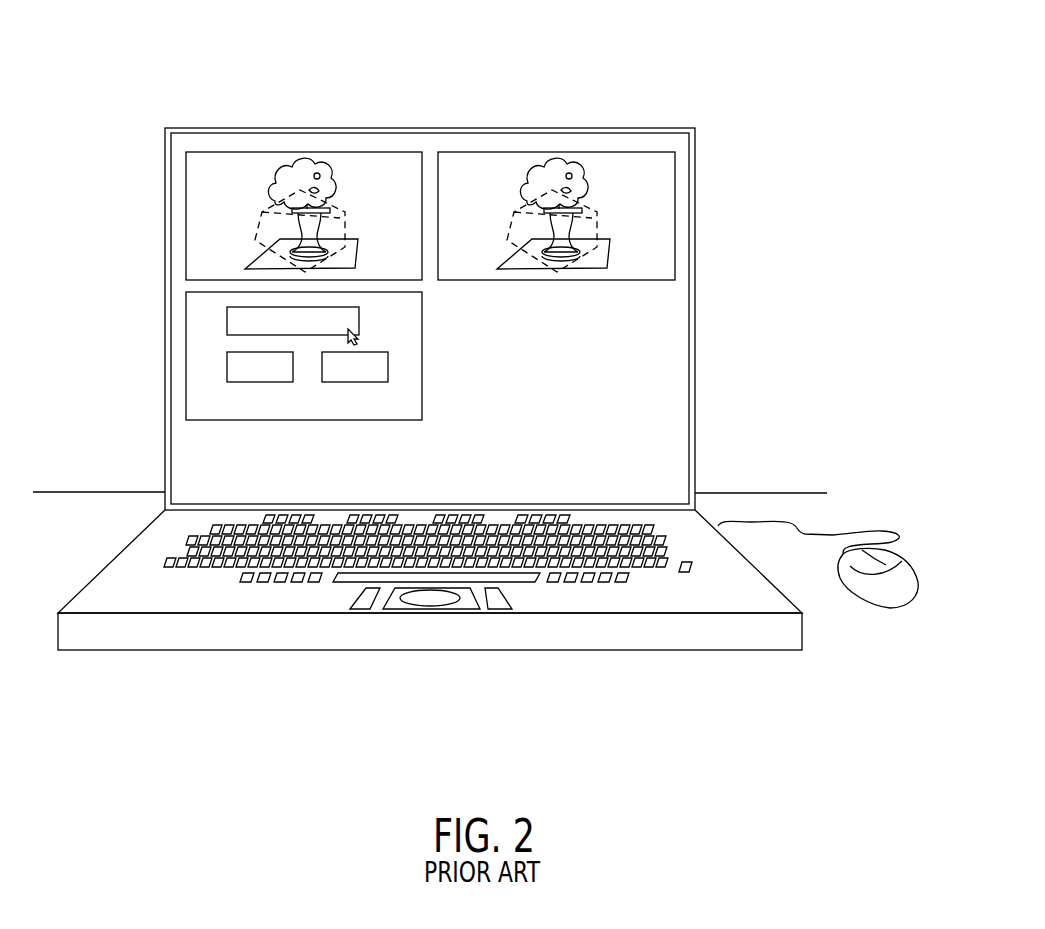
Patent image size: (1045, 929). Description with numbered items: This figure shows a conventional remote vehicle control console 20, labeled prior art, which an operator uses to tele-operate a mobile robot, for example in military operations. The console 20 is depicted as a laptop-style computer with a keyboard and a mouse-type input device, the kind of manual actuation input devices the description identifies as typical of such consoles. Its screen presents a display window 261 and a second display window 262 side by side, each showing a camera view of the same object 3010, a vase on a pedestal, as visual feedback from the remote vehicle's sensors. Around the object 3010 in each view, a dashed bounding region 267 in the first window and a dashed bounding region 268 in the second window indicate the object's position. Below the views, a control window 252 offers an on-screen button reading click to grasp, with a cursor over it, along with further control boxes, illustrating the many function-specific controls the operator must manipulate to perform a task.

The computer system 20 is at (418, 80).
The display screen window 261 is at (186, 217).
The second display window 262 is at (675, 224).
The object bounding region (first view) 267 is at (345, 210).
The object bounding region (second view) 268 is at (597, 210).
The object (vase) 3010 is at (302, 232).
The control window 252 is at (186, 354).